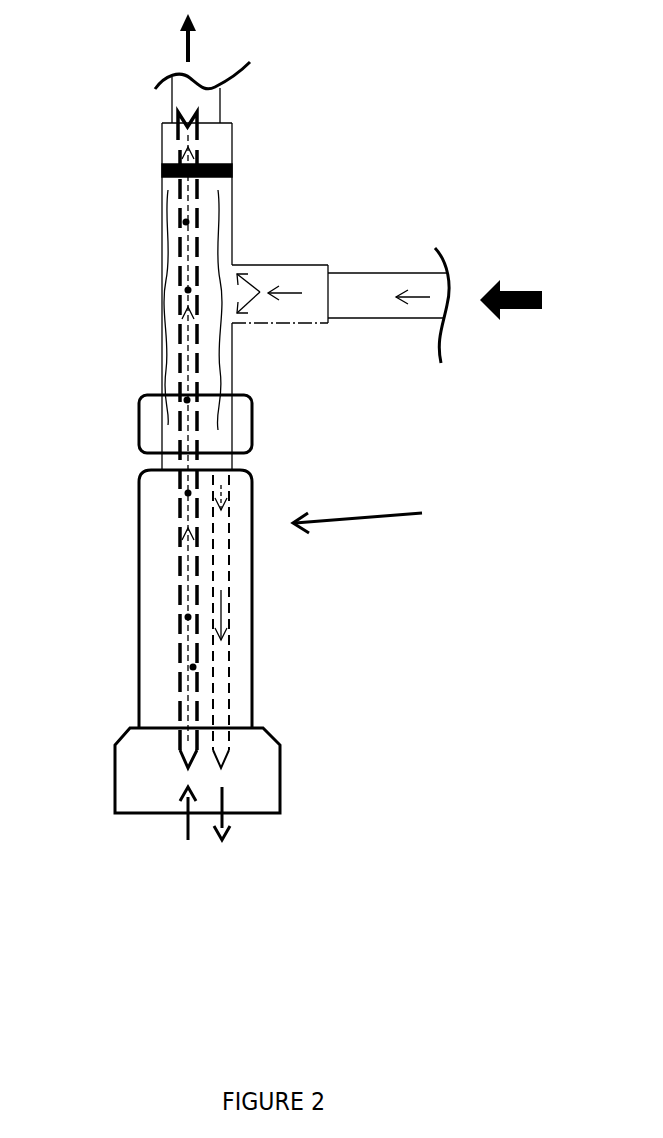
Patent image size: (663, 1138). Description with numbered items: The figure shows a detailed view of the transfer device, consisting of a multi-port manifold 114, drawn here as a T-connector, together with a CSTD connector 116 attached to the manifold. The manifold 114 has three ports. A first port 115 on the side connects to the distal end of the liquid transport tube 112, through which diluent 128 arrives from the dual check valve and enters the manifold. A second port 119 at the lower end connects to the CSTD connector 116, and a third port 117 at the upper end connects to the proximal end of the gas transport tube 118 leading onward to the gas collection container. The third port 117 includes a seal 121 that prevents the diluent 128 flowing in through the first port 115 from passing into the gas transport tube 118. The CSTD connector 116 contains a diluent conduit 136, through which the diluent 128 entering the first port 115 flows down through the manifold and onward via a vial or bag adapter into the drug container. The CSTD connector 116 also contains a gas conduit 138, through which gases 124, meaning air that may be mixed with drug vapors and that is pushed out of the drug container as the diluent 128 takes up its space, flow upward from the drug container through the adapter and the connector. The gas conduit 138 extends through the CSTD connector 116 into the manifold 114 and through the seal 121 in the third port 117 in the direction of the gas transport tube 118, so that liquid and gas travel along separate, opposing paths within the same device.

The liquid transport tube 112 is at (370, 272).
The multi-port manifold 114 is at (232, 220).
The first port 115 is at (328, 295).
The CSTD connector 116 is at (388, 518).
The third port 117 is at (225, 113).
The gas transport tube 118 is at (172, 98).
The second port 119 is at (168, 447).
The seal 121 is at (233, 167).
The gases 124 is at (186, 290).
The diluent 128 is at (413, 300).
The diluent conduit 136 is at (230, 654).
The gas conduit 138 is at (178, 580).